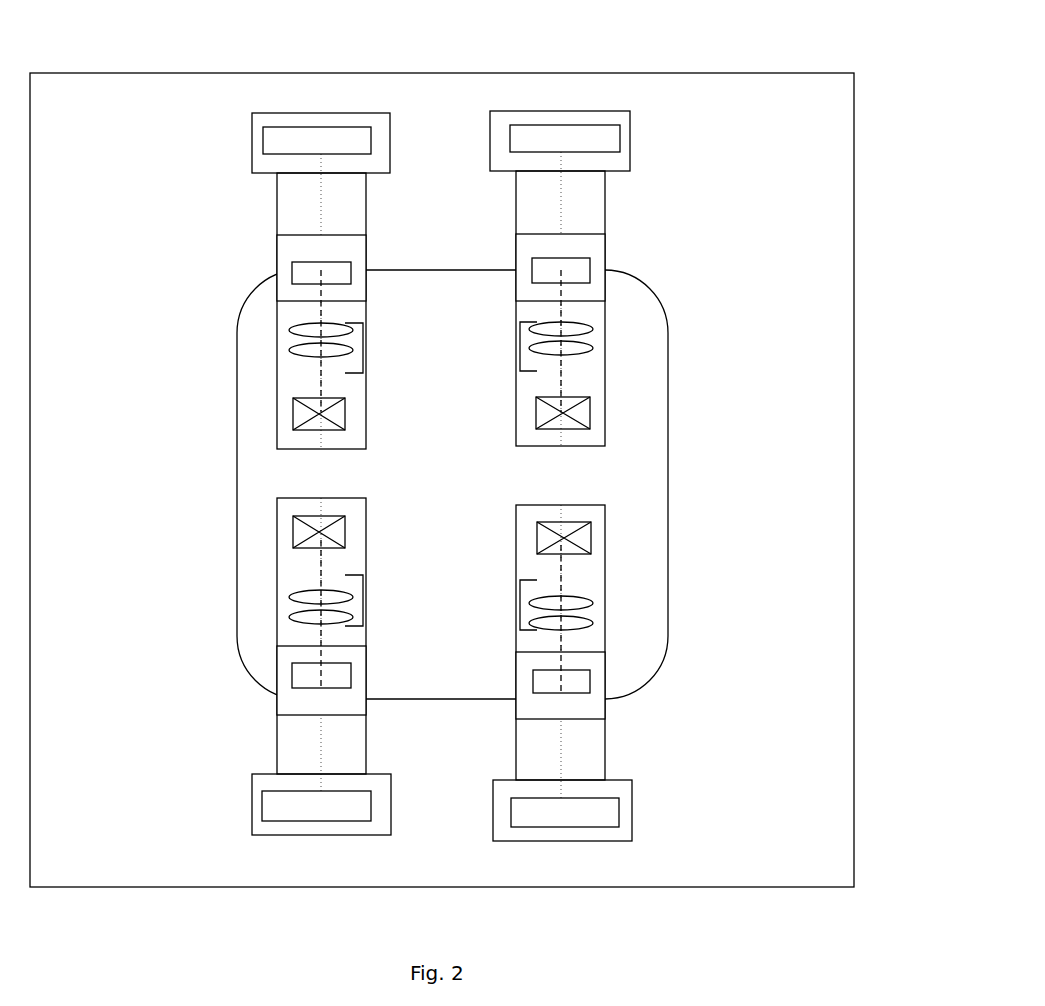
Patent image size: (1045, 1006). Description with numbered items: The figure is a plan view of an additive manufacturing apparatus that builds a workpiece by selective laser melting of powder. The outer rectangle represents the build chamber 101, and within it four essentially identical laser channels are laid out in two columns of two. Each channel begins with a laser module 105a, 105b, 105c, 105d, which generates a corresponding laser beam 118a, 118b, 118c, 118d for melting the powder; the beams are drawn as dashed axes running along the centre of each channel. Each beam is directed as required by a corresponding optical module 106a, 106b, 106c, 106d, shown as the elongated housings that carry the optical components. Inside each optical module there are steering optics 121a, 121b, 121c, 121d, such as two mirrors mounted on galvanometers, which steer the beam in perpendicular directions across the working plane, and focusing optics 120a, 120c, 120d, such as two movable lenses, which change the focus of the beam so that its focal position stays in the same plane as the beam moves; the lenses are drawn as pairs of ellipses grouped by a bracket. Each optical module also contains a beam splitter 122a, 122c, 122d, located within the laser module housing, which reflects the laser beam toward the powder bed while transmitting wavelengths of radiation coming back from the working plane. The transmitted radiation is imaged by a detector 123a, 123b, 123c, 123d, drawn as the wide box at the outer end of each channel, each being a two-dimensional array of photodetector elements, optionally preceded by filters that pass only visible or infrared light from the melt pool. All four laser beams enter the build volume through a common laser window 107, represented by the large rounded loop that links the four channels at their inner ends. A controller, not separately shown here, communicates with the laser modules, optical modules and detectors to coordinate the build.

The build chamber 101 is at (857, 248).
The laser module 105a is at (288, 246).
The laser module 105b is at (598, 243).
The laser module 105c is at (285, 703).
The laser module 105d is at (592, 707).
The optical module 106a is at (275, 378).
The optical module 106b is at (608, 378).
The optical module 106c is at (275, 578).
The optical module 106d is at (608, 562).
The common laser window 107 is at (670, 470).
The laser beam 118a is at (325, 378).
The laser beam 118b is at (560, 378).
The laser beam 118c is at (325, 568).
The laser beam 118d is at (560, 573).
The focusing optics 120a is at (363, 348).
The focusing optics 120c is at (363, 600).
The focusing optics 120d is at (520, 347).
The steering optics 121a is at (305, 405).
The steering optics 121b is at (570, 402).
The steering optics 121c is at (307, 543).
The steering optics 121d is at (572, 550).
The beam splitter 122a is at (333, 280).
The beam splitter 122c is at (340, 668).
The beam splitter 122d is at (543, 275).
The detector 123a is at (275, 130).
The detector 123b is at (606, 128).
The detector 123c is at (272, 818).
The detector 123d is at (608, 825).